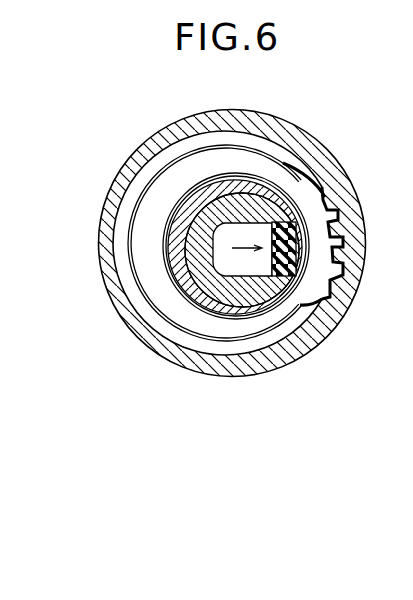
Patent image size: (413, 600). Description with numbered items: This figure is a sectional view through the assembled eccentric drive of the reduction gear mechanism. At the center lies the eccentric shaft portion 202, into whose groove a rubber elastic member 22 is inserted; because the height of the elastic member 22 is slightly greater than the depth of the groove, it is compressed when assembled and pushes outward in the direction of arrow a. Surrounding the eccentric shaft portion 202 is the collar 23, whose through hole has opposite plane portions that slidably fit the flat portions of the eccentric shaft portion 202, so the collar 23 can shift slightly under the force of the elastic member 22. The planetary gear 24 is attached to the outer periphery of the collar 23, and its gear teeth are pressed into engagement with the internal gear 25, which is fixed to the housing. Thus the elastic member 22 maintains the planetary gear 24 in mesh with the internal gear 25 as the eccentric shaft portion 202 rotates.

The elastic member 22 is at (262, 218).
The collar 23 is at (285, 196).
The planetary gear 24 is at (320, 190).
The internal gear 25 is at (350, 190).
The eccentric shaft portion 202 is at (213, 257).